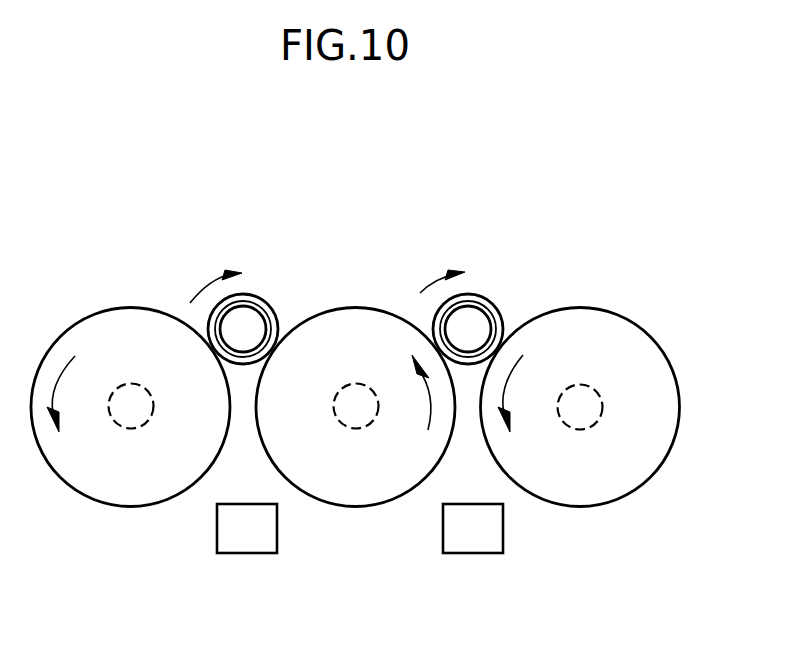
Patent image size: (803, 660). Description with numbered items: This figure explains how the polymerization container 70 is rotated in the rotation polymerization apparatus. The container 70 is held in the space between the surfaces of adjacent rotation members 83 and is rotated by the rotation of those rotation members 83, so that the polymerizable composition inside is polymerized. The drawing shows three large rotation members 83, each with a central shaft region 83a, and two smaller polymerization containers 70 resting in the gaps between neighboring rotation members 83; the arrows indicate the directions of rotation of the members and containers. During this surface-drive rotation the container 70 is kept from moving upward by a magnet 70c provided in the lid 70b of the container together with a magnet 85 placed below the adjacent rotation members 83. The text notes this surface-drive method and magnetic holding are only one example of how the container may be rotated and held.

The polymerization container 70 is at (265, 292).
The lid 70b is at (273, 303).
The magnet 70c is at (277, 307).
The rotation member 83 is at (82, 500).
The drum shaft 83a is at (137, 429).
The magnet 85 is at (248, 553).